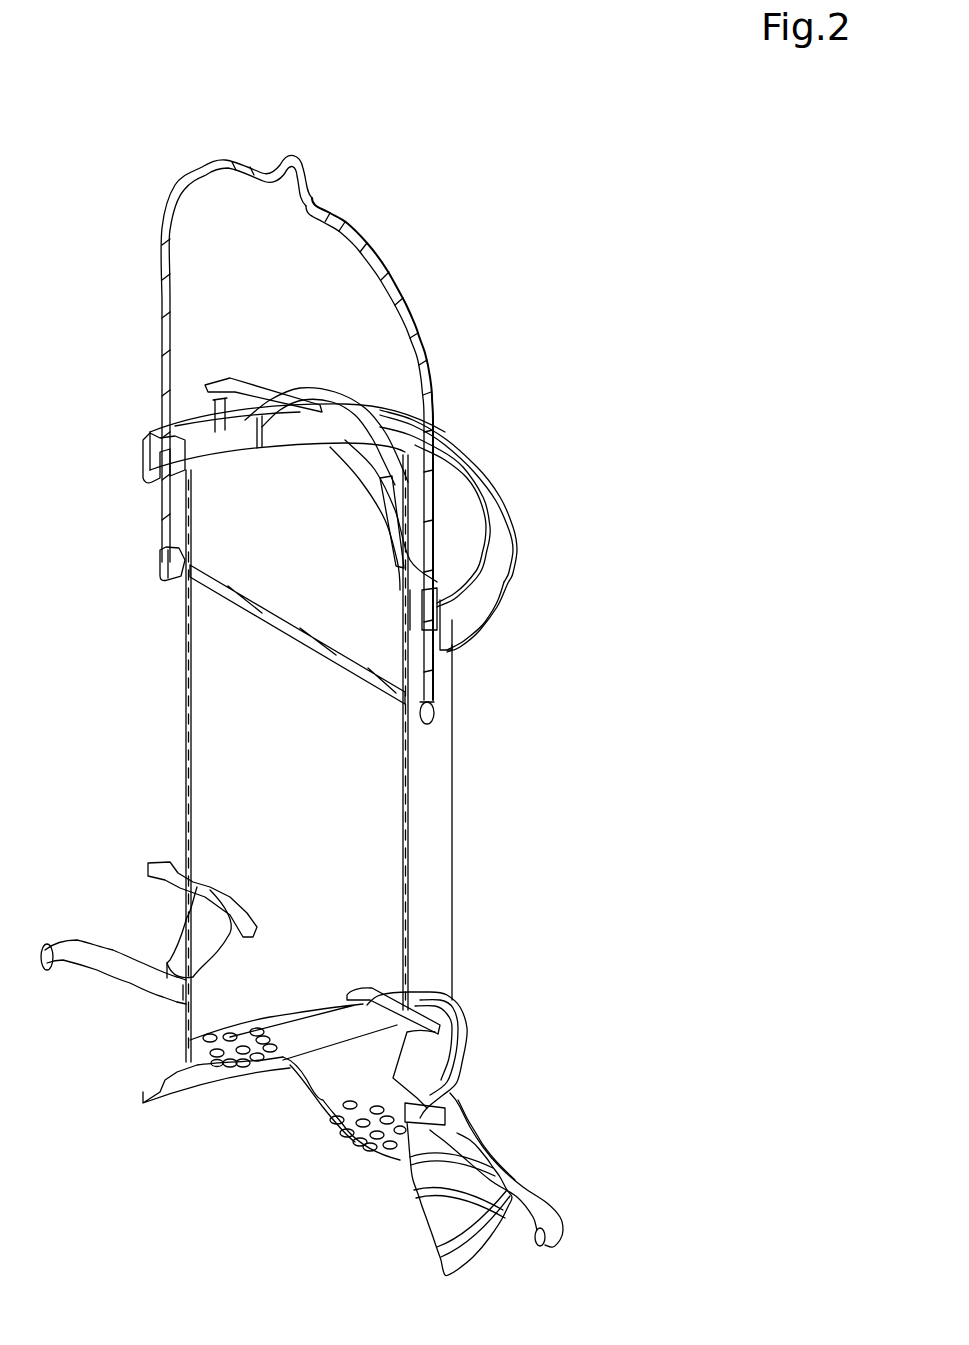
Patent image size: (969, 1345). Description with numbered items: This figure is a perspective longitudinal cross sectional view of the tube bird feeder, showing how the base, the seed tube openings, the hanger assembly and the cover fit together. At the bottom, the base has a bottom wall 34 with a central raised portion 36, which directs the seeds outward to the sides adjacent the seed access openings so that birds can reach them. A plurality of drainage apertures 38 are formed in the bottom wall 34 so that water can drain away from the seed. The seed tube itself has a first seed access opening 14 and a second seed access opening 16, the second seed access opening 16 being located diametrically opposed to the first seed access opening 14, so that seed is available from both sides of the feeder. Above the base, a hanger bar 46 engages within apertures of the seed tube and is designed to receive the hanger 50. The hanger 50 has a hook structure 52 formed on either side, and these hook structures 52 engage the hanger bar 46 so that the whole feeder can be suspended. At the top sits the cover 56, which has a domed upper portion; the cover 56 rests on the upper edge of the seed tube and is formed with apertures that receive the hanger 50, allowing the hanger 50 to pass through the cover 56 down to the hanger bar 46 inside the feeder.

The first seed access opening 14 is at (454, 1063).
The second seed access opening 16 is at (198, 939).
The bottom wall 34 is at (342, 1083).
The central raised portion 36 is at (292, 1068).
The drainage apertures 38 is at (224, 1062).
The hanger bar 46 is at (226, 611).
The hanger 50 is at (158, 399).
The hook structure 52 is at (166, 571).
The cover 56 is at (484, 428).